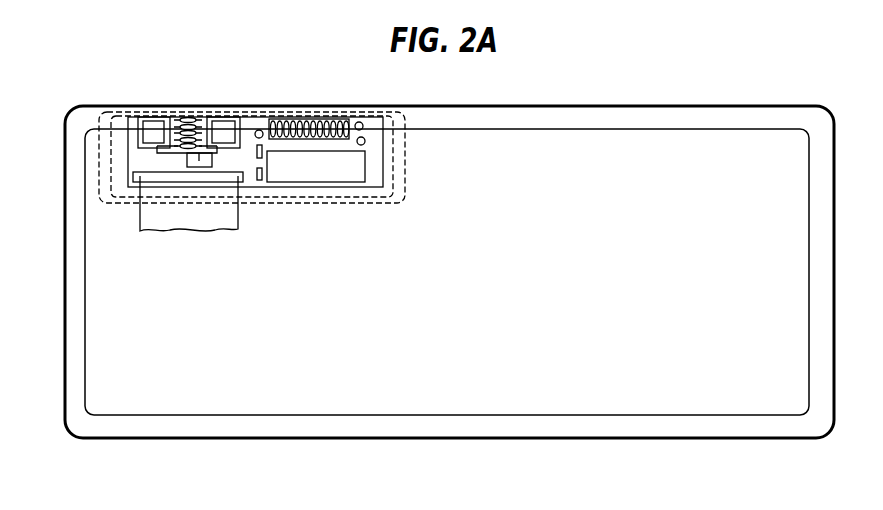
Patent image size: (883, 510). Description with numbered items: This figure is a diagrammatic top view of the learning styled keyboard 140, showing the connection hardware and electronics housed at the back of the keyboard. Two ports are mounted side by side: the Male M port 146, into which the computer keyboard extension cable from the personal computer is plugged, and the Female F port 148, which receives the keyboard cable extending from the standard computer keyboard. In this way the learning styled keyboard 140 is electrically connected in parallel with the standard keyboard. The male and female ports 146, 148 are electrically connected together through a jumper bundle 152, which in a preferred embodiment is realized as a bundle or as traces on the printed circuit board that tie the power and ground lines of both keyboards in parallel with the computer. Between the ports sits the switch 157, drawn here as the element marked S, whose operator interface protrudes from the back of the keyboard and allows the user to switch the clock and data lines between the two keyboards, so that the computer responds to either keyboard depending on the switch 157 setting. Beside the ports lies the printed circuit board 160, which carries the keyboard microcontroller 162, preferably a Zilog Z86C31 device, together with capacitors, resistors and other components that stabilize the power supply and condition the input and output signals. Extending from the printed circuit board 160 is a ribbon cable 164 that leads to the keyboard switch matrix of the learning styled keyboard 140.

The learning styled keyboard 140 is at (489, 448).
The Male M port 146 is at (233, 117).
The Female F port 148 is at (145, 116).
The switch S is at (207, 116).
The jumper bundle 152 is at (187, 160).
The switch 157 is at (217, 163).
The printed circuit board 160 is at (352, 188).
The keyboard microcontroller 162 is at (302, 188).
The ribbon cable 164 is at (212, 237).